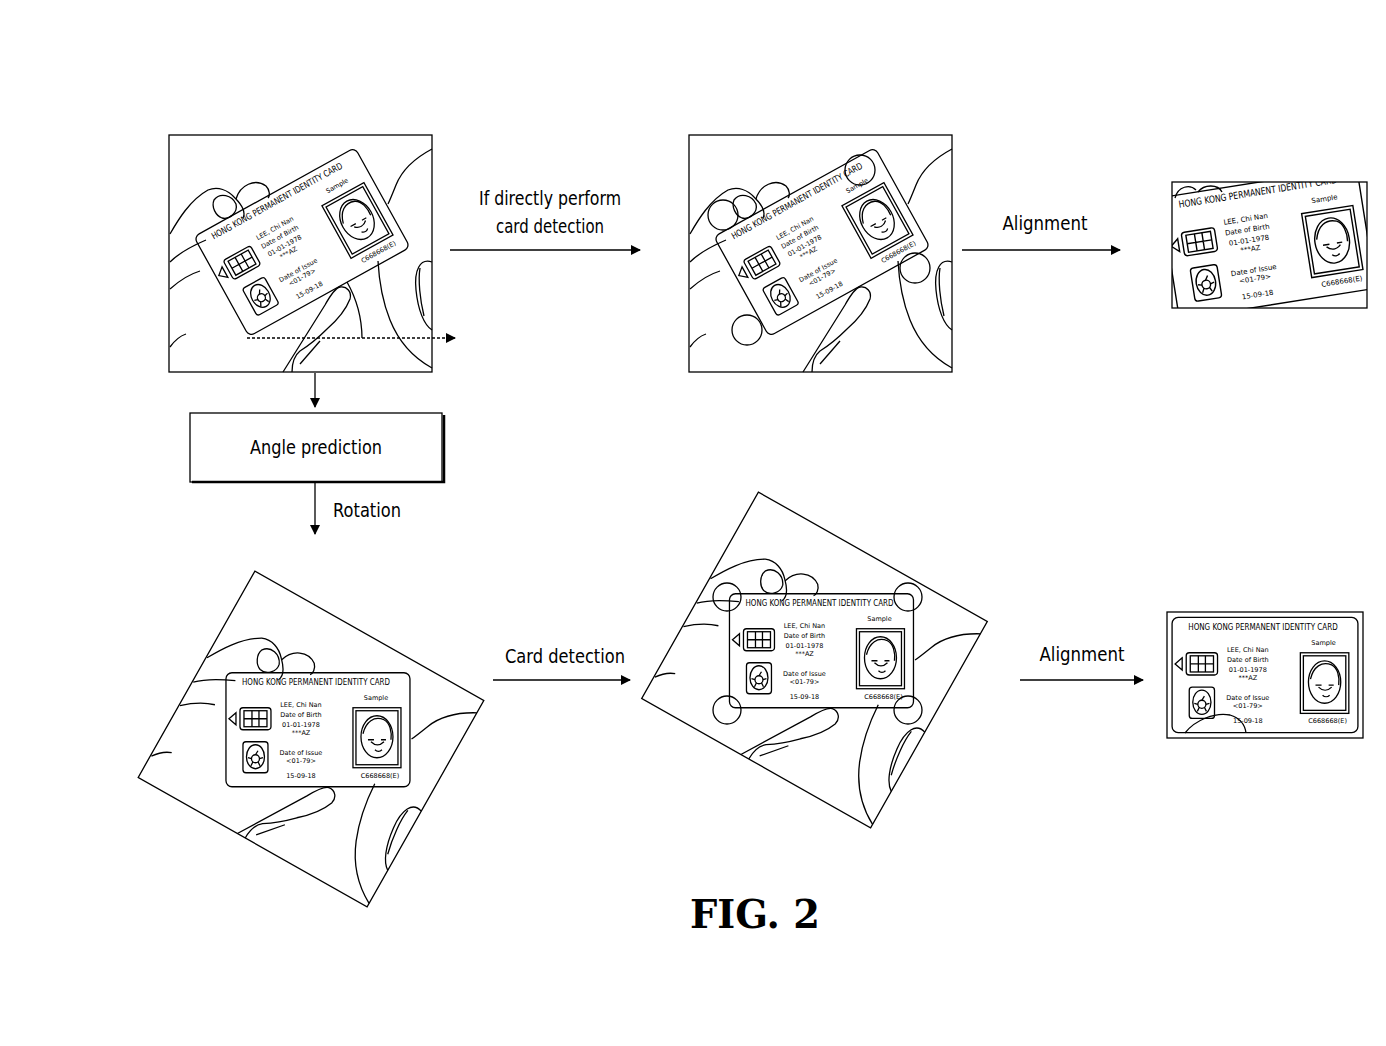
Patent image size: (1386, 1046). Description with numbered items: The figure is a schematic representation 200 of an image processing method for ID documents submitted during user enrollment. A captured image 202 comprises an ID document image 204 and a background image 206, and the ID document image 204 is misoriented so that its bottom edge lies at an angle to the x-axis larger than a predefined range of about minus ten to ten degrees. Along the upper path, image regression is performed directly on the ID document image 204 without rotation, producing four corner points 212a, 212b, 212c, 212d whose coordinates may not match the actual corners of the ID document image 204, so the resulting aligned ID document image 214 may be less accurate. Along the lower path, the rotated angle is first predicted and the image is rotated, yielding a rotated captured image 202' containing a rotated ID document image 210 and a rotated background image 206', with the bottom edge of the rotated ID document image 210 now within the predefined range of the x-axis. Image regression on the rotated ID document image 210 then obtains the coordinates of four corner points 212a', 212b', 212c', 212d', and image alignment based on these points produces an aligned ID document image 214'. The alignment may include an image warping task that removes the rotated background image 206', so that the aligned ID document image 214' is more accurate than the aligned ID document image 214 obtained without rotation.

The schematic representation 200 is at (1305, 94).
The captured image 202 is at (341, 215).
The ID document image 204 is at (207, 273).
The background image 206 is at (527, 293).
The corner point 212a is at (686, 153).
The corner point 212b is at (732, 366).
The corner point 212c is at (934, 345).
The corner point 212d is at (842, 124).
The rotated captured image 202' is at (299, 732).
The rotated ID document image 210 is at (230, 697).
The rotated background image 206' is at (547, 706).
The corner point of rotated ID document image 212a' is at (701, 561).
The corner point of rotated ID document image 212b' is at (701, 743).
The corner point of rotated ID document image 212c' is at (948, 747).
The corner point of rotated ID document image 212d' is at (933, 561).
The aligned ID document image 214 is at (1268, 262).
The aligned ID document image 214' is at (1265, 708).